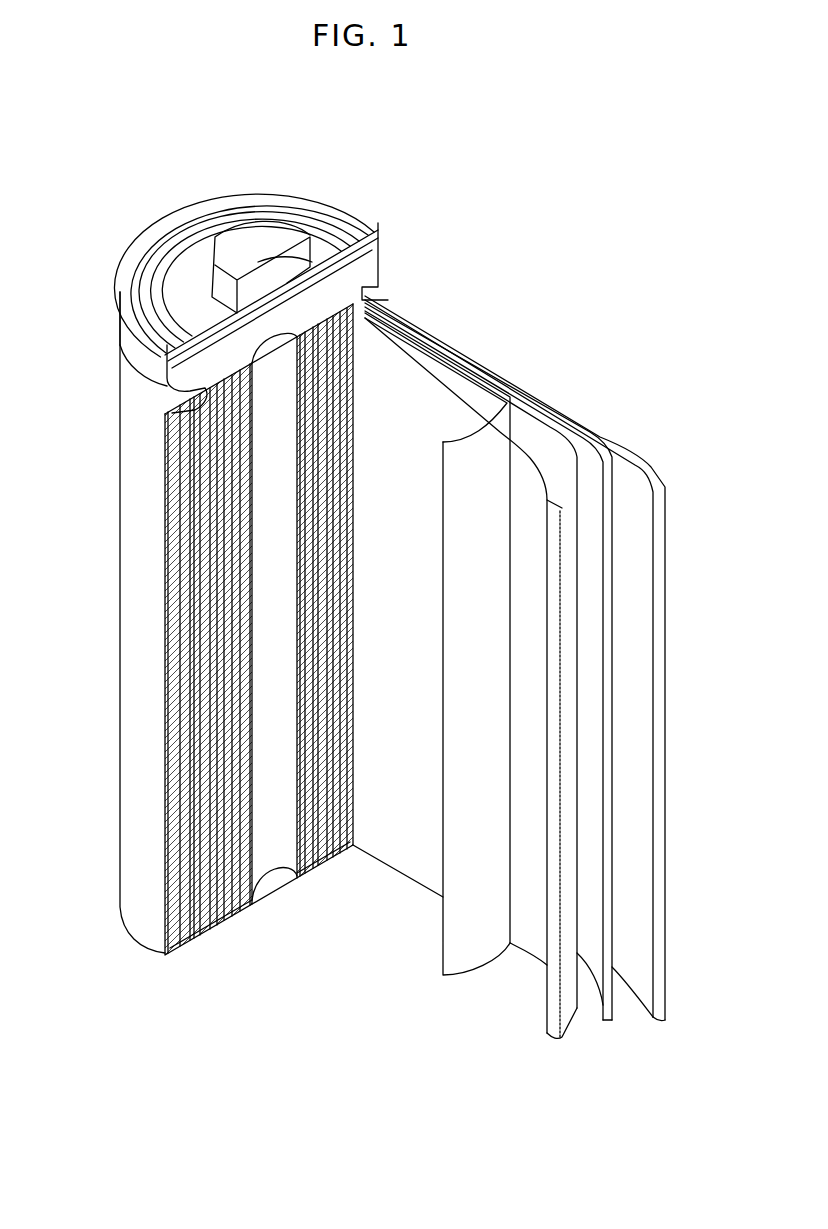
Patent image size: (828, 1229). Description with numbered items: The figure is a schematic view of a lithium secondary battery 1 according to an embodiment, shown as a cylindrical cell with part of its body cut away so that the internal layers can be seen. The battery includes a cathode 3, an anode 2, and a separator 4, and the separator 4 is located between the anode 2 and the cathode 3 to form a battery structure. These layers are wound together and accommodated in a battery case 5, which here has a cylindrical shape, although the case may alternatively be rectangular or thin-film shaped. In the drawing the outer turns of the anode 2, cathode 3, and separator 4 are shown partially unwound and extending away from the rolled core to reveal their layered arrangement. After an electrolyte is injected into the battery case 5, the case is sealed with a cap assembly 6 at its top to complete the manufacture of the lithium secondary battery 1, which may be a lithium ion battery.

The lithium secondary battery 1 is at (478, 223).
The anode 2 is at (655, 466).
The cathode 3 is at (535, 420).
The separator 4 is at (452, 360).
The battery case 5 is at (131, 620).
The cap assembly 6 is at (245, 243).